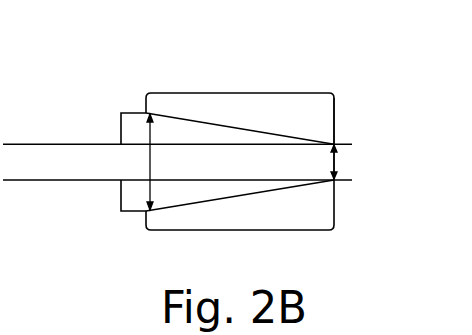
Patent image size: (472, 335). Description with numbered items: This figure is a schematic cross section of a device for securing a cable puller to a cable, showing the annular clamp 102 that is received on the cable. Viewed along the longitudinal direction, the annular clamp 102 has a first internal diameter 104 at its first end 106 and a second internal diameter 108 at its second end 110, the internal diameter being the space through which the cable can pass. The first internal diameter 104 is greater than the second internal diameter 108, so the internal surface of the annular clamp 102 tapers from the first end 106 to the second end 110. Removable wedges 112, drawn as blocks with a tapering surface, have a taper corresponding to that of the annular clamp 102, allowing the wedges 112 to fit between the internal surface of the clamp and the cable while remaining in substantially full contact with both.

The annular clamp 102 is at (286, 113).
The first internal diameter 104 is at (148, 137).
The first end 106 is at (155, 93).
The second internal diameter 108 is at (333, 163).
The second end 110 is at (334, 117).
The removable wedges 112 is at (208, 131).